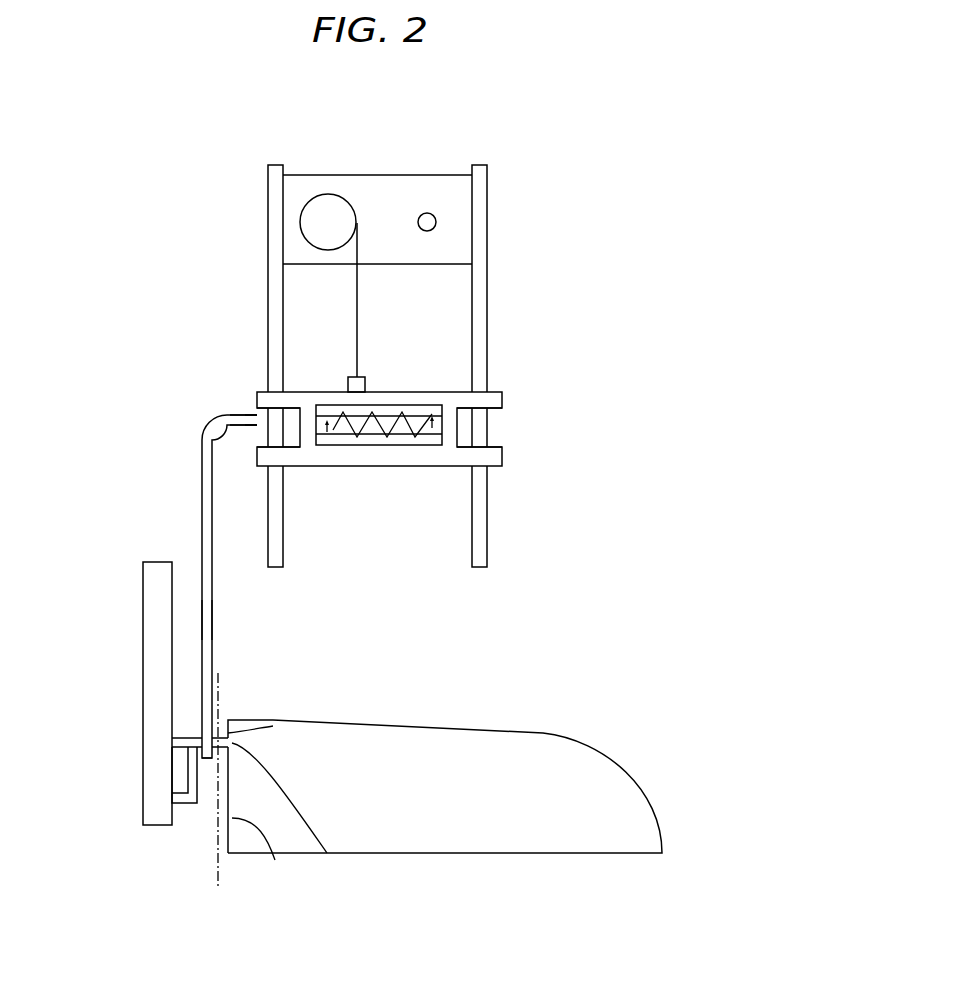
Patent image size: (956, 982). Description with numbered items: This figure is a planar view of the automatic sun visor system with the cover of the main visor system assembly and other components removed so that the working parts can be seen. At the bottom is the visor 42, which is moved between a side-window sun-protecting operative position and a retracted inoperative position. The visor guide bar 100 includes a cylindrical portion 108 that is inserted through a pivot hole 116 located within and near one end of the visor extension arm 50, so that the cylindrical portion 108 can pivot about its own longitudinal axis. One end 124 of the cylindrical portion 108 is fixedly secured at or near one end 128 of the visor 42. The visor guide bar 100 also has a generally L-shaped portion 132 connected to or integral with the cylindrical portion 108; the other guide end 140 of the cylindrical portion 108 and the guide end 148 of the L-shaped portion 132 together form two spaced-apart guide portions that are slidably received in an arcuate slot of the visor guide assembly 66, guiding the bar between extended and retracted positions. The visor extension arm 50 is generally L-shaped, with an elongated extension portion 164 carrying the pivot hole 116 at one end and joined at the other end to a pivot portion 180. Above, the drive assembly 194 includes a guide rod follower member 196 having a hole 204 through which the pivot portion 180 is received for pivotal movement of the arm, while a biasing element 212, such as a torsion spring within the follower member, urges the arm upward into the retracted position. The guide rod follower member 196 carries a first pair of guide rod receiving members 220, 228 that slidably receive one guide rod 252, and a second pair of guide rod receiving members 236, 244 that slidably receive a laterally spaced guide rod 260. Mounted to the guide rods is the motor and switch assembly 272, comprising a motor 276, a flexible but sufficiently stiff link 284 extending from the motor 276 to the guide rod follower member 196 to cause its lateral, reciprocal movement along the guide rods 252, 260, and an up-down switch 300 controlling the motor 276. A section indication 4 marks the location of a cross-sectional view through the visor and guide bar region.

The section line 4- 4 is at (246, 885).
The visor 42 is at (572, 853).
The visor extension arm 50 is at (201, 530).
The visor guide assembly 66 is at (143, 637).
The visor guide bar 100 is at (185, 737).
The cylindrical portion 108 is at (273, 727).
The pivot hole 116 is at (212, 758).
The end of cylindrical portion 124 is at (327, 853).
The end of visor 128 is at (275, 860).
The L-shaped portion 132 is at (182, 803).
The guide end of cylindrical portion 140 is at (172, 743).
The guide end of L-shaped portion 148 is at (172, 800).
The elongated extension portion 164 is at (212, 618).
The pivot portion 180 is at (253, 412).
The drive assembly 194 is at (582, 294).
The guide rod follower member 196 is at (534, 425).
The hole 204 is at (253, 423).
The biasing element 212 is at (376, 448).
The guide rod receiving member 220 is at (256, 408).
The guide rod receiving member 228 is at (252, 457).
The guide rod receiving member 236 is at (503, 402).
The guide rod receiving member 244 is at (503, 458).
The guide rod 252 is at (268, 275).
The guide rod 260 is at (488, 283).
The motor and switch assembly 272 is at (398, 158).
The motor 276 is at (326, 222).
The link 284 is at (357, 302).
The switch 300 is at (445, 198).